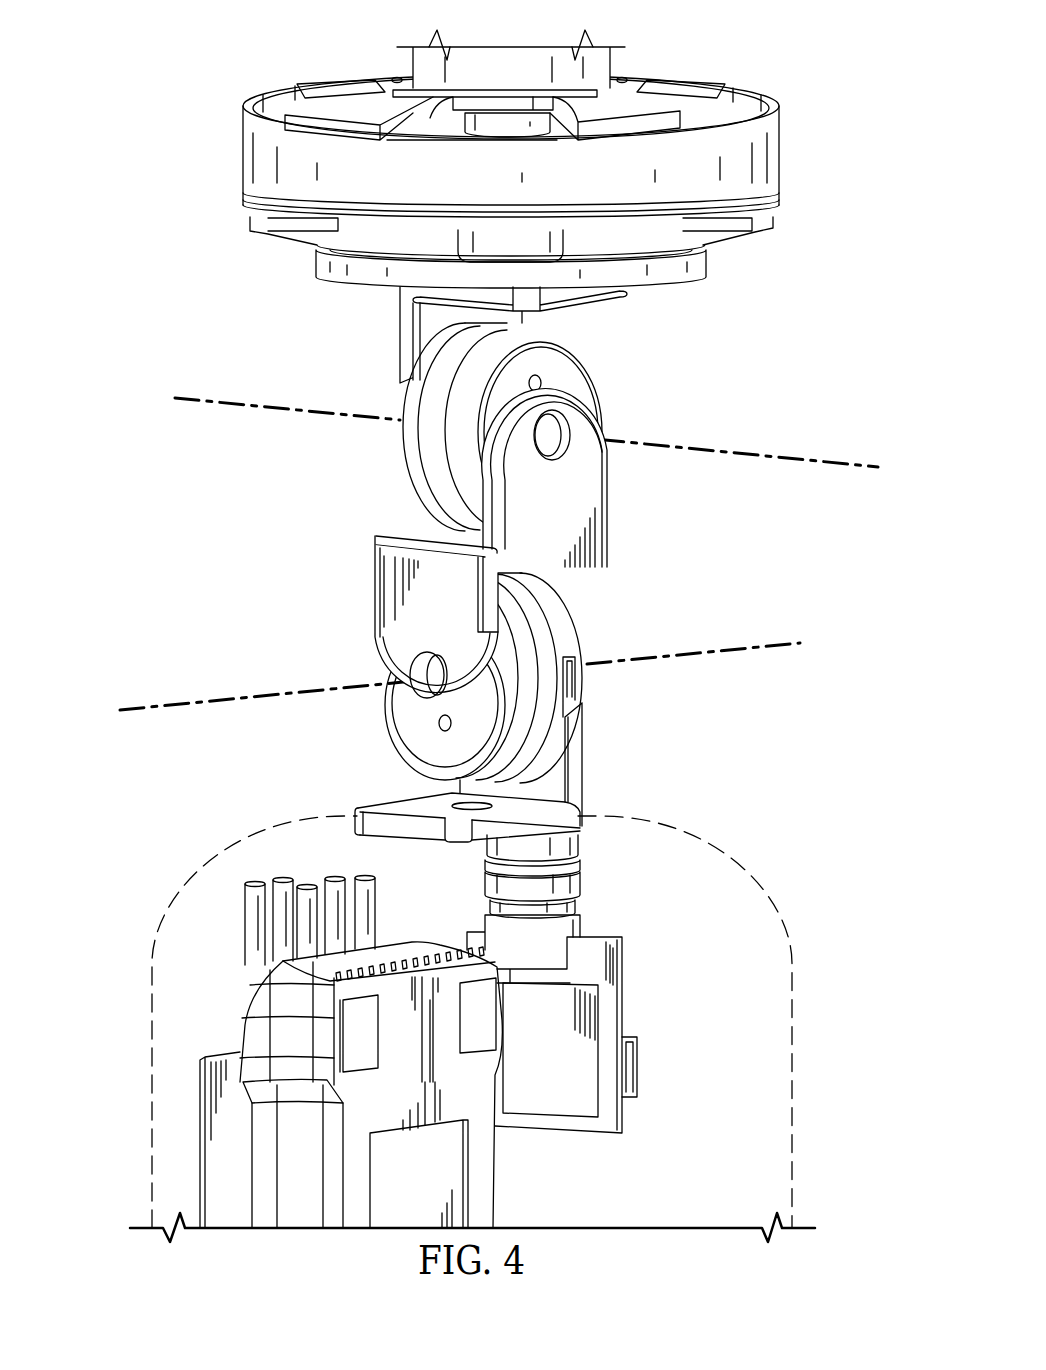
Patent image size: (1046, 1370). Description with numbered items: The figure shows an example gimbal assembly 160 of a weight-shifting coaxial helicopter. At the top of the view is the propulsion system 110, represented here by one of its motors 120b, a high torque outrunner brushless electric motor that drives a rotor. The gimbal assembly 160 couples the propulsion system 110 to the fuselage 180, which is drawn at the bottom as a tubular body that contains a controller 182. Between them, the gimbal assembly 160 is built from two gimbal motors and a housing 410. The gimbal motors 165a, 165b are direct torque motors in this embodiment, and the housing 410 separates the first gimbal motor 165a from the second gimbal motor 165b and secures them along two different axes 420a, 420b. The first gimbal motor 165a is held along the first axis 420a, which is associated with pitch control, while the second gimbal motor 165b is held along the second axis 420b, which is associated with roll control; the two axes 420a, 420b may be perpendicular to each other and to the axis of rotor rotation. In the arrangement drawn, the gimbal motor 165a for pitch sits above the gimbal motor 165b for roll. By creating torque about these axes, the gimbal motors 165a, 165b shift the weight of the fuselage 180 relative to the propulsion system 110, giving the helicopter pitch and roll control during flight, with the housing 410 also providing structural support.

The propulsion system 110 is at (220, 92).
The motor 120b is at (781, 156).
The gimbal assembly 160 is at (651, 303).
The gimbal motor 165a is at (404, 460).
The gimbal motor 165b is at (381, 699).
The housing 410 is at (375, 574).
The first axis 420a is at (731, 451).
The second axis 420b is at (207, 698).
The fuselage 180 is at (152, 1105).
The controller 182 is at (495, 1176).